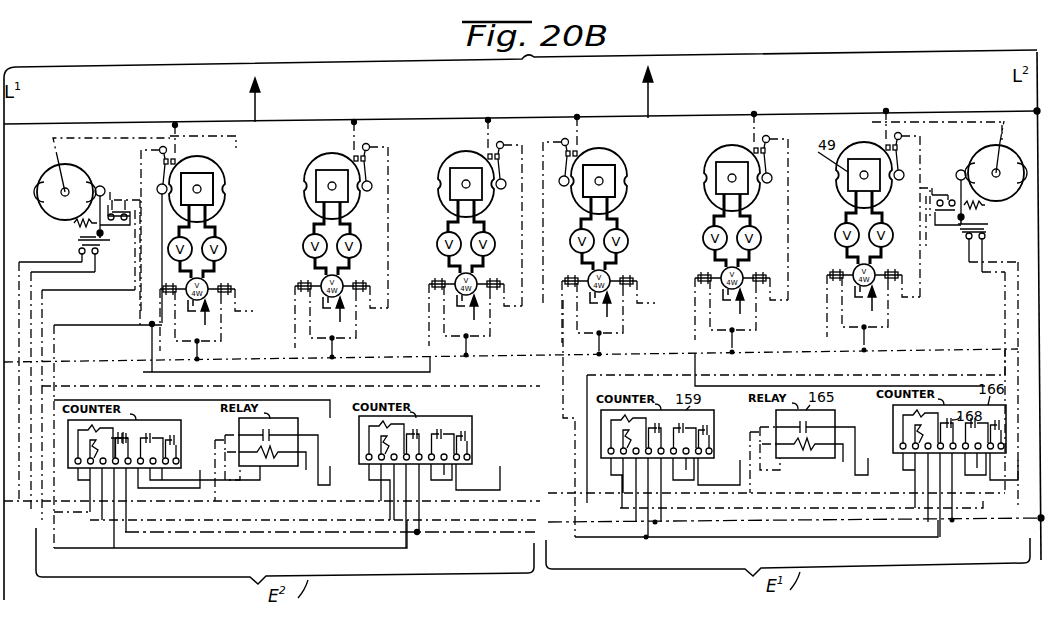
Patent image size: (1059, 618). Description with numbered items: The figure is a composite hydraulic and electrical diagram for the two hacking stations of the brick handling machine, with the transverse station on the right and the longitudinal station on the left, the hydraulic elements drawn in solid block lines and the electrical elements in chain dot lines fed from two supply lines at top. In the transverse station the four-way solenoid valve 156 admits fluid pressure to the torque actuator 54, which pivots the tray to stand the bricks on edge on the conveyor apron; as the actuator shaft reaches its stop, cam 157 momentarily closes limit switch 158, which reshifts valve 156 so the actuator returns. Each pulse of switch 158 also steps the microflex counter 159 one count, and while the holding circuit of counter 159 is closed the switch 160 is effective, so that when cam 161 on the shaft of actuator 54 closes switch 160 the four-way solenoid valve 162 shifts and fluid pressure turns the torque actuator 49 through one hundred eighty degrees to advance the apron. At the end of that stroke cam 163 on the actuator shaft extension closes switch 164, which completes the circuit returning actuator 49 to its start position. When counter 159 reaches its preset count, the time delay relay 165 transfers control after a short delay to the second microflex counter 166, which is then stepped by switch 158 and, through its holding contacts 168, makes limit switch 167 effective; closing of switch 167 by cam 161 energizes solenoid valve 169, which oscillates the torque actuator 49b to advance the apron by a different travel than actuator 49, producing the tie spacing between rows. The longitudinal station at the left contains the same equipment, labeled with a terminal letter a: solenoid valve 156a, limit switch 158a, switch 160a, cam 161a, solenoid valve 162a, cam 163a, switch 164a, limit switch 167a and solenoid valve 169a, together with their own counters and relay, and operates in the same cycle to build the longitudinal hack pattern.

The torque actuator 49 is at (207, 181).
The torque actuator 49b is at (717, 170).
The torque actuator 54 is at (610, 171).
The four-way solenoid valve 156 is at (588, 281).
The four-way solenoid valve 156a is at (455, 285).
The cam 157 is at (590, 158).
The limit switch 158 is at (566, 146).
The limit switch 158a is at (494, 148).
The microflex counter 159 is at (445, 413).
The switch 160 is at (948, 200).
The switch 160a is at (119, 205).
The cam 161 is at (984, 158).
The cam 161a is at (52, 176).
The four-way solenoid valve 162 is at (852, 275).
The four-way solenoid valve 162a is at (206, 287).
The cam 163 is at (858, 153).
The cam 163a is at (198, 186).
The switch 164 is at (896, 140).
The switch 164a is at (170, 136).
The time delay relay 165 is at (274, 420).
The microflex counter 166 is at (160, 420).
The limit switch 167 is at (988, 233).
The limit switch 167a is at (76, 244).
The holding contacts 168 is at (121, 446).
The solenoid valve 169 is at (721, 279).
The solenoid valve 169a is at (321, 286).